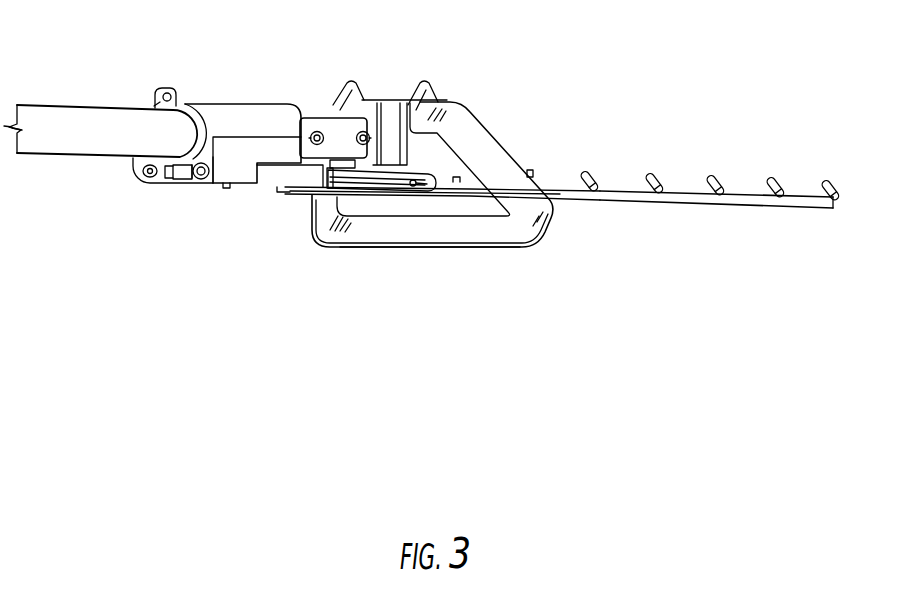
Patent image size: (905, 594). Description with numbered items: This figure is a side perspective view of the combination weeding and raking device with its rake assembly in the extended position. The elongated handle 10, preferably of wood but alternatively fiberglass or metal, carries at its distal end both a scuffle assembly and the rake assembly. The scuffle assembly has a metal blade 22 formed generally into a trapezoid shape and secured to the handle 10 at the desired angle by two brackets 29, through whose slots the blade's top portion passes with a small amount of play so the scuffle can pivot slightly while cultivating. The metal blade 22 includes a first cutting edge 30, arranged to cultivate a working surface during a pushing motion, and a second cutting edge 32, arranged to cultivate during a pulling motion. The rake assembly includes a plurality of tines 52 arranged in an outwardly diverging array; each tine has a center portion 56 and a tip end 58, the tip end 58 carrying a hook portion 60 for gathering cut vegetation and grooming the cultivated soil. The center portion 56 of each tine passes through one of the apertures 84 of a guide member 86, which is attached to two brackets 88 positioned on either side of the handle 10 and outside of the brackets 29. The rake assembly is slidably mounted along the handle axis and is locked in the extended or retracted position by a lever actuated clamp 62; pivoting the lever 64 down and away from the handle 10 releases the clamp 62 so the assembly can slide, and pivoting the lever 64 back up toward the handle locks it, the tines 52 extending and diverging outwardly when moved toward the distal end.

The elongated handle 10 is at (22, 103).
The metal blade 22 is at (373, 230).
The brackets 29 is at (356, 84).
The first cutting edge 30 is at (487, 217).
The second cutting edge 32 is at (400, 248).
The tines 52 is at (737, 204).
The center portion 56 is at (457, 183).
The tip end 58 is at (848, 182).
The hook portion 60 is at (833, 209).
The lever actuated clamp 62 is at (177, 184).
The lever 64 is at (162, 87).
The apertures 84 is at (437, 184).
The guide member 86 is at (422, 176).
The brackets 88 is at (331, 122).